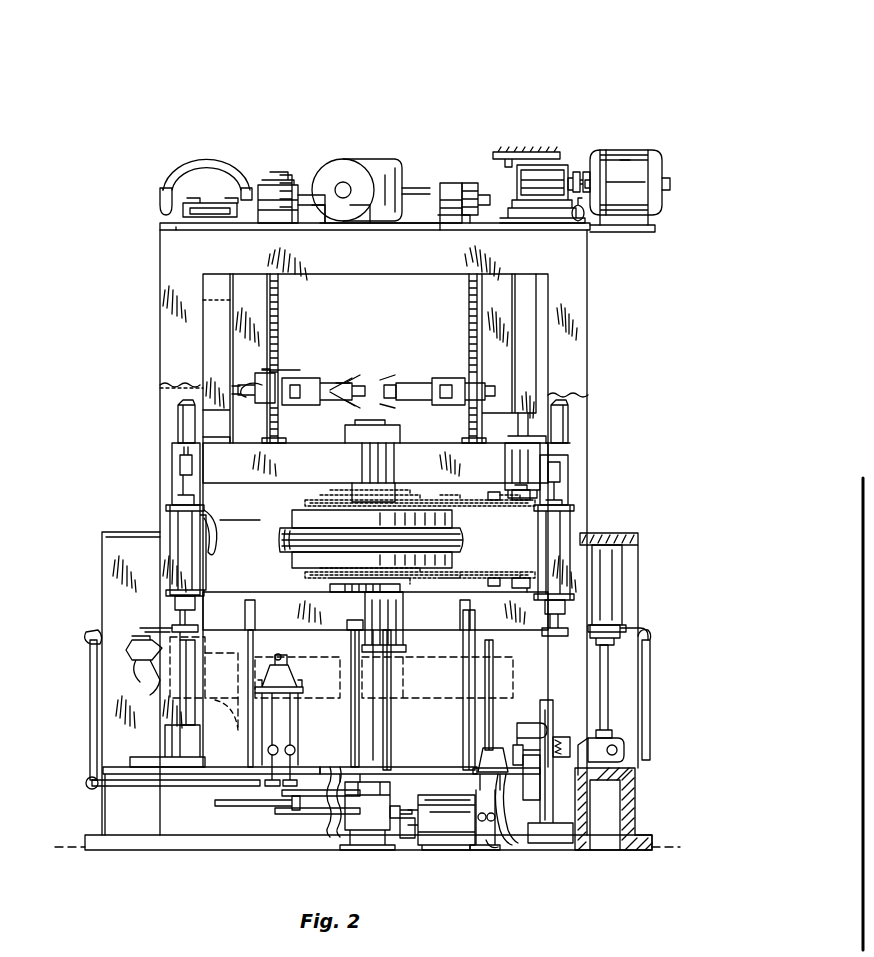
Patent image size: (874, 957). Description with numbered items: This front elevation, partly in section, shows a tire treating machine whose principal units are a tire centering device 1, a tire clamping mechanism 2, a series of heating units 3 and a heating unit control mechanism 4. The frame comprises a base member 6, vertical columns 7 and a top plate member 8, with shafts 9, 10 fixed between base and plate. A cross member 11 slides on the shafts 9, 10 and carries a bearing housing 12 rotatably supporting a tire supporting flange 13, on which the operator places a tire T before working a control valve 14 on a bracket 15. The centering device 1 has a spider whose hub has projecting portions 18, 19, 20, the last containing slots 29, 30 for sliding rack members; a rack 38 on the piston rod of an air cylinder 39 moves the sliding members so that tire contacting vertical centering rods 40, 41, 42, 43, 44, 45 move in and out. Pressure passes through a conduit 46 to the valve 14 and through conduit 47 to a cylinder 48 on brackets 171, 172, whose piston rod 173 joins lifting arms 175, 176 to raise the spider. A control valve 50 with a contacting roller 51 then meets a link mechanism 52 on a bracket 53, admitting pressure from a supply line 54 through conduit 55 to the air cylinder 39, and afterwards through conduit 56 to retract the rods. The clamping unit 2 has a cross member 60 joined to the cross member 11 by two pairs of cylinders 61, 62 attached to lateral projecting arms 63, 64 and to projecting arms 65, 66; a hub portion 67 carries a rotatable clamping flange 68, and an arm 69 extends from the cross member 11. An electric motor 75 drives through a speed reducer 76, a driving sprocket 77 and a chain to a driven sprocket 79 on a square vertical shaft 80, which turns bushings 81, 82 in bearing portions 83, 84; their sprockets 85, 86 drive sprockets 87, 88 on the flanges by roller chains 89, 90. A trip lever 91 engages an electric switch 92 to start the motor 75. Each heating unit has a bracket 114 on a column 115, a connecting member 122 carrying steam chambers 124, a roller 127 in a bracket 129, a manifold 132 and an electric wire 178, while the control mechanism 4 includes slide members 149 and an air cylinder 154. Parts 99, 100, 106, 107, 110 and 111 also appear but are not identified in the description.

The tire centering device 1 is at (212, 713).
The tire clamping mechanism 2 is at (248, 520).
The heating units 3 is at (292, 362).
The heating unit control mechanism 4 is at (352, 133).
The base member 6 is at (215, 824).
The vertical columns 7 is at (168, 411).
The top plate member 8 is at (176, 227).
The shaft 9 is at (185, 425).
The shaft 10 is at (572, 432).
The cross member 11 is at (228, 606).
The bearing housing 12 is at (398, 632).
The tire supporting flange 13 is at (292, 562).
The control valve 14 is at (290, 692).
The bracket 15 is at (195, 802).
The projecting portion 18 is at (300, 826).
The projecting portion 19 is at (452, 812).
The projecting portion 20 is at (375, 815).
The slot 29 is at (386, 824).
The slot 30 is at (338, 802).
The rack 38 is at (410, 820).
The air cylinder 39 is at (472, 832).
The tire contacting vertical centering rod 40 is at (256, 640).
The tire contacting vertical centering rod 41 is at (282, 668).
The tire contacting vertical centering rod 42 is at (391, 750).
The tire contacting vertical centering rod 43 is at (486, 728).
The tire contacting vertical centering rod 44 is at (472, 681).
The tire contacting vertical centering rod 45 is at (378, 745).
The conduit 46 is at (250, 802).
The conduit 47 is at (130, 802).
The cylinder 48 is at (612, 582).
The control valve 50 is at (480, 762).
The contacting roller 51 is at (615, 790).
The link mechanism 52 is at (518, 734).
The bracket 53 is at (555, 825).
The supply line 54 is at (560, 800).
The conduit 55 is at (508, 810).
The conduit 56 is at (492, 846).
The cross member 60 is at (243, 472).
The cylinders 61 is at (185, 525).
The cylinders 62 is at (572, 522).
The lateral projecting arm 63 is at (190, 466).
The lateral projecting arm 64 is at (560, 468).
The projecting arm 65 is at (180, 620).
The projecting arm 66 is at (572, 632).
The hub portion 67 is at (350, 460).
The clamping flange 68 is at (290, 522).
The arm 69 is at (286, 658).
The electric motor 75 is at (645, 168).
The speed reducer 76 is at (620, 162).
The driving sprocket 77 is at (578, 178).
The driven sprocket 79 is at (510, 170).
The vertical shaft 80 is at (528, 185).
The bushing 81 is at (565, 447).
The bushing 82 is at (648, 682).
The bearing portion 83 is at (560, 475).
The bearing portion 84 is at (592, 636).
The sprocket 85 is at (520, 507).
The sprocket 86 is at (530, 577).
The driven sprocket 87 is at (308, 505).
The driven sprocket 88 is at (320, 578).
The roller chain 89 is at (492, 507).
The roller chain 90 is at (490, 575).
The trip lever 91 is at (140, 628).
The electric switch 92 is at (95, 660).
The screw 99 is at (285, 301).
The screw 100 is at (468, 300).
The bearing 106 is at (272, 180).
The bearing 107 is at (466, 180).
The gear 110 is at (286, 175).
The gear 111 is at (462, 185).
The bracket 114 is at (262, 377).
The column 115 is at (215, 333).
The connecting member 122 is at (310, 380).
The steam chamber 124 is at (335, 380).
The roller 127 is at (378, 380).
The bracket 129 is at (345, 383).
The manifold 132 is at (268, 389).
The slide members 149 is at (243, 212).
The air cylinder 154 is at (392, 178).
The bracket 171 is at (628, 549).
The bracket 172 is at (115, 541).
The piston rod 173 is at (606, 665).
The lifting arm 175 is at (618, 760).
The lifting arm 176 is at (125, 748).
The electric wire 178 is at (398, 380).
The tire T is at (285, 542).